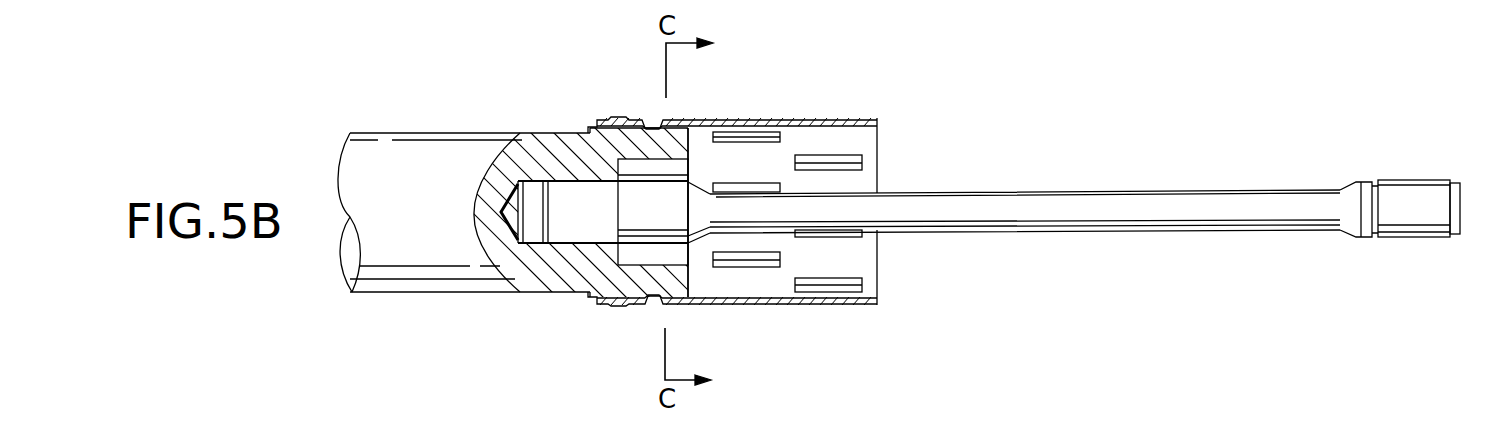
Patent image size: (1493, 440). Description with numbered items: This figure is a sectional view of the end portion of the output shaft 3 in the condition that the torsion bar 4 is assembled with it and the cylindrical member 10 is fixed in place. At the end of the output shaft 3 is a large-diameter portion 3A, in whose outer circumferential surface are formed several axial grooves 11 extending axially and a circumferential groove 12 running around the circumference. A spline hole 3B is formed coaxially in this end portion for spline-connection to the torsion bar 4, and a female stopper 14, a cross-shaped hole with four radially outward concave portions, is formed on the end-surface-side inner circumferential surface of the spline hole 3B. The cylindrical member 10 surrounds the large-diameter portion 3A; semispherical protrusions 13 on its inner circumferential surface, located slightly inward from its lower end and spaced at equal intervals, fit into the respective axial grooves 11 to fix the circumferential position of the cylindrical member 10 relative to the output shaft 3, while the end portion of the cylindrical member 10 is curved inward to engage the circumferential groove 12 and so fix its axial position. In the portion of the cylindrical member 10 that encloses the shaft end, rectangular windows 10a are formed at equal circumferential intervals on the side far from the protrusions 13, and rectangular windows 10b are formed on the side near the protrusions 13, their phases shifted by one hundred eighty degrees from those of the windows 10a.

The output shaft 3 is at (410, 150).
The large-diameter portion 3A is at (688, 119).
The spline hole 3B is at (563, 232).
The torsion bar 4 is at (1066, 222).
The cylindrical member 10 is at (866, 305).
The rectangular windows 10a is at (852, 158).
The rectangular windows 10b is at (757, 263).
The axial grooves 11 is at (664, 121).
The circumferential groove 12 is at (612, 304).
The semispherical protrusions 13 is at (640, 120).
The female stopper 14 is at (672, 263).